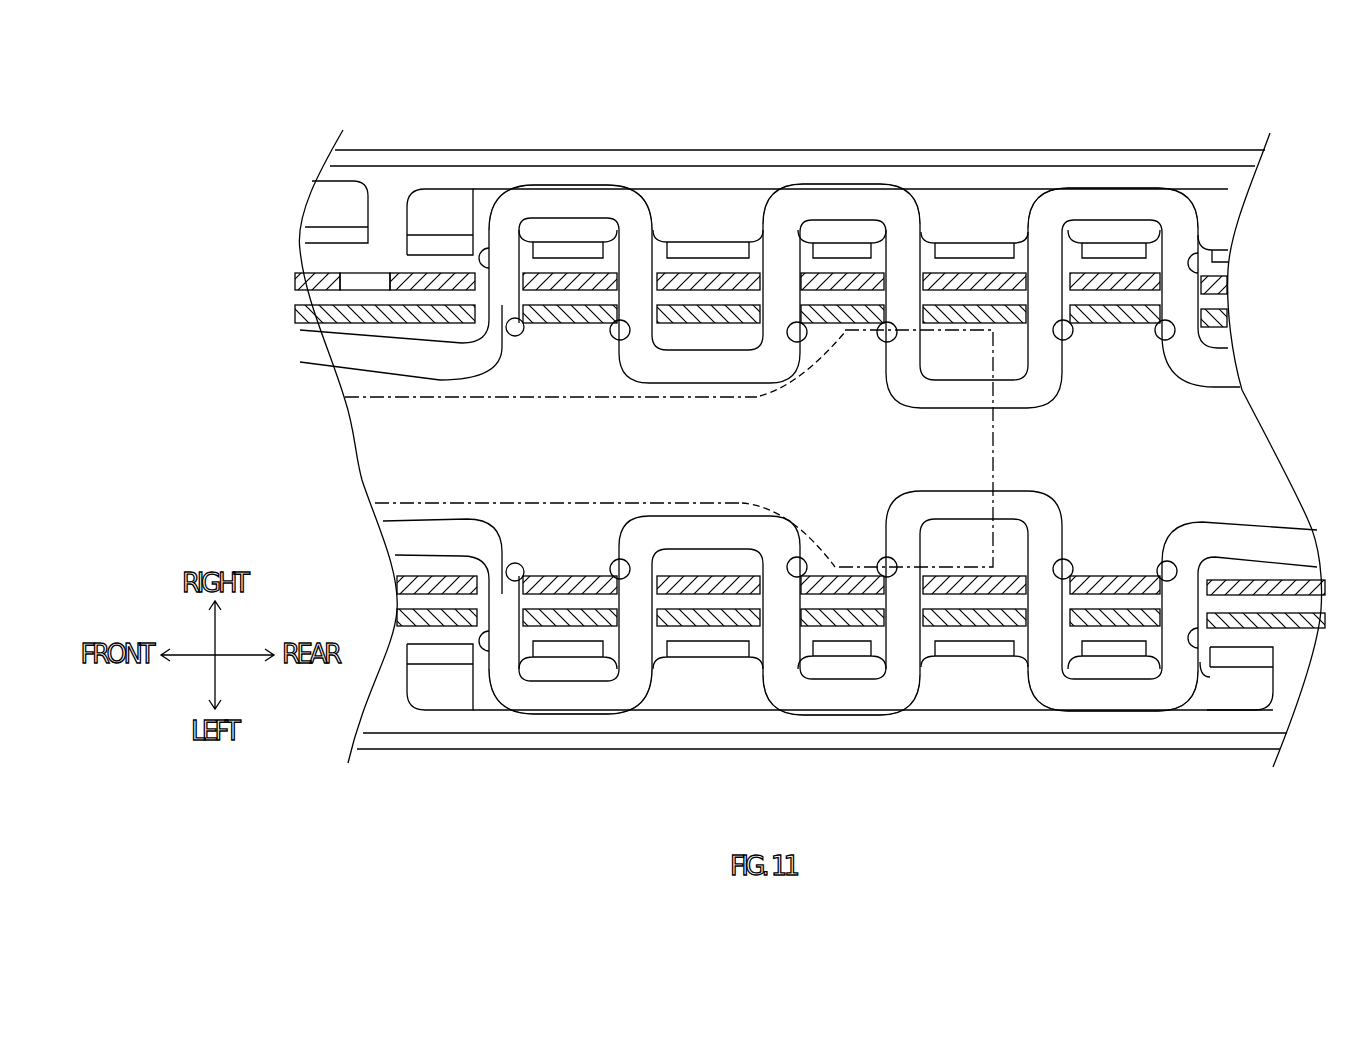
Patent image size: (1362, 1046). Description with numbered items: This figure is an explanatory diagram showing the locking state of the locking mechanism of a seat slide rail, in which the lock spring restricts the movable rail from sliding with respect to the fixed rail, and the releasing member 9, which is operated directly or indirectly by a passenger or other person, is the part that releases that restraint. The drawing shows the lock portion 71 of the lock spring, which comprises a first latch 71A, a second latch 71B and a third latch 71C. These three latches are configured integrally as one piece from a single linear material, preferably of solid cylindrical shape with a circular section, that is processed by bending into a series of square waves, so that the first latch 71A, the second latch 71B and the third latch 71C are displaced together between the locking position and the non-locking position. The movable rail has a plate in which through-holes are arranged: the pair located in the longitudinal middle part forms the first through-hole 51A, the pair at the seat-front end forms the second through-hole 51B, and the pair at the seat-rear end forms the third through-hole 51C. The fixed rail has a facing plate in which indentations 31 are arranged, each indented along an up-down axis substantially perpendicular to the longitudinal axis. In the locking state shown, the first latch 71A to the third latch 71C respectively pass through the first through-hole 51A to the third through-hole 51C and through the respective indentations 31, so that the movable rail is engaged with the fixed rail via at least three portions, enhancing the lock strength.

The releasing member 9 is at (350, 433).
The indentation 31 is at (810, 448).
The lock portion 71 is at (808, 444).
The first latch 71A is at (841, 444).
The second latch 71B is at (570, 444).
The third latch 71C is at (1113, 444).
The first through-hole 51A is at (842, 449).
The second through-hole 51B is at (568, 449).
The third through-hole 51C is at (1115, 450).